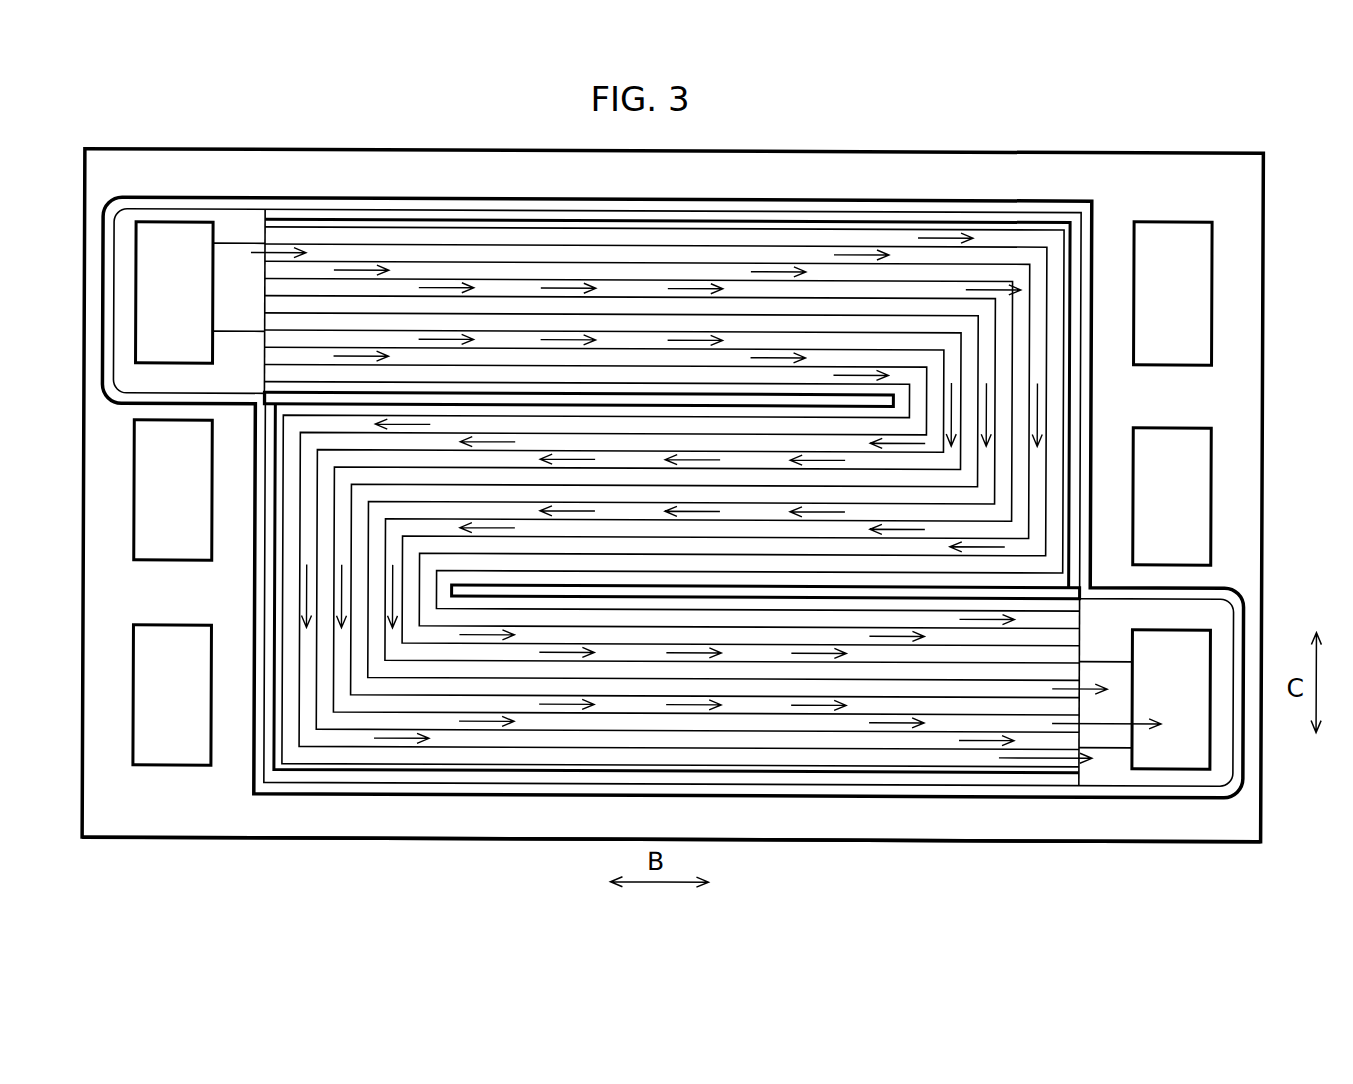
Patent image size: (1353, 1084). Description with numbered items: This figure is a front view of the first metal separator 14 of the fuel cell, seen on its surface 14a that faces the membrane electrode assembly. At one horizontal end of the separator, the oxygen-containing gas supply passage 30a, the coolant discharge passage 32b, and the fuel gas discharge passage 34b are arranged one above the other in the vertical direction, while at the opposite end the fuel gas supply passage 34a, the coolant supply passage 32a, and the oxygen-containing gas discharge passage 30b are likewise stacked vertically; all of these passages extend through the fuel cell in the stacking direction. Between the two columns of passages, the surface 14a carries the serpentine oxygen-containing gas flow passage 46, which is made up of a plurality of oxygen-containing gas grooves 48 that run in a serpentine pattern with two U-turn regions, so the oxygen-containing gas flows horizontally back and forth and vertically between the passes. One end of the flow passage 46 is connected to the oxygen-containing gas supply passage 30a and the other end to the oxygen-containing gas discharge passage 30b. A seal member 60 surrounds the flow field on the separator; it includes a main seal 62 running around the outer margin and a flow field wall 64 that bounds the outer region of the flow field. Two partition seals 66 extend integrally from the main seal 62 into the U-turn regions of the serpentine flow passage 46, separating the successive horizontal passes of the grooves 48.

The first metal separator 14 is at (947, 128).
The surface 14a is at (997, 824).
The oxygen-containing gas supply passage 30a is at (200, 301).
The oxygen-containing gas discharge passage 30b is at (1145, 693).
The coolant supply passage 32a is at (1172, 496).
The coolant discharge passage 32b is at (173, 490).
The fuel gas supply passage 34a is at (1173, 293).
The fuel gas discharge passage 34b is at (172, 695).
The serpentine oxygen-containing gas flow passage 46 is at (647, 251).
The oxygen-containing gas grooves 48 is at (493, 272).
The seal member 60 is at (1013, 193).
The main seal 62 is at (899, 210).
The flow field wall 64 is at (936, 220).
The partition seals 66 is at (706, 393).